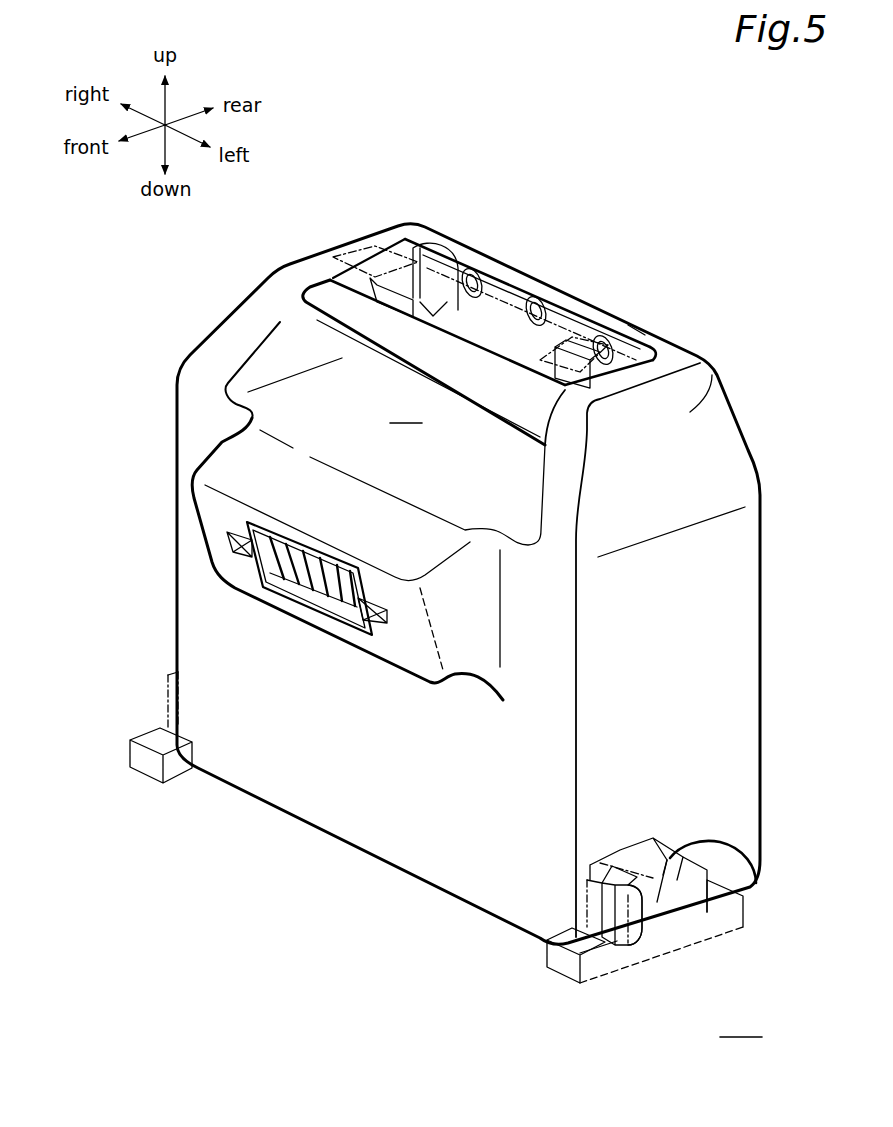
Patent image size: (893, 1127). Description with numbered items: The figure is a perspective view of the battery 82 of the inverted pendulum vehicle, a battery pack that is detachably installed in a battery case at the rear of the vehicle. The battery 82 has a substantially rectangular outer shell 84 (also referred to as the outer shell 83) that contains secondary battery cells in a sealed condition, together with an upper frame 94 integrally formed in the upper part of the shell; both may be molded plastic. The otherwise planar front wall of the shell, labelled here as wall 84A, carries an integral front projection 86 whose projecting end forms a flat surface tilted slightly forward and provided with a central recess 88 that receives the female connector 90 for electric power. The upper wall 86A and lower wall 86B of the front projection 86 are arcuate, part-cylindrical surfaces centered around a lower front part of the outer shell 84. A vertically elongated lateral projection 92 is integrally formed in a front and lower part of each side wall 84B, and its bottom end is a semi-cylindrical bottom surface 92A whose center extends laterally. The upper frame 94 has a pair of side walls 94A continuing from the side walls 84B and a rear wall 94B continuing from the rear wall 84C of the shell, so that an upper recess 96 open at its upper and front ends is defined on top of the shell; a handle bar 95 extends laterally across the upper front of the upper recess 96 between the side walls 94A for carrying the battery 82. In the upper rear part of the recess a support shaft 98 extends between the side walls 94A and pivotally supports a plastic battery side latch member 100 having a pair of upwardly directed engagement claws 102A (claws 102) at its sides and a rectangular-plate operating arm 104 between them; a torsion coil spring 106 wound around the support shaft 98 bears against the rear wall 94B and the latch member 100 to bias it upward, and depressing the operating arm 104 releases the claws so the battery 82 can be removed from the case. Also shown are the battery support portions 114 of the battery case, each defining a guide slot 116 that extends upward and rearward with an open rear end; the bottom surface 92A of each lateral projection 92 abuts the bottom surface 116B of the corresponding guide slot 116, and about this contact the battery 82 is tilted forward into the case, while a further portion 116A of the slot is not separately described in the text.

The battery 82 is at (771, 419).
The outer shell 83 is at (772, 516).
The outer shell 84 is at (740, 745).
The front wall 84A is at (370, 830).
The side wall 84B is at (735, 815).
The rear wall 84C is at (765, 660).
The front projection 86 is at (457, 633).
The upper wall 86A is at (242, 463).
The lower wall 86B is at (440, 684).
The central recess 88 is at (320, 597).
The female connector 90 is at (310, 562).
The lateral projection 92 is at (657, 902).
The semi-cylindrical bottom surface 92A is at (637, 946).
The upper frame 94 is at (700, 481).
The side wall 94A is at (690, 412).
The rear wall 94B is at (625, 328).
The handle bar 95 is at (325, 307).
The upper recess 96 is at (478, 342).
The support shaft 98 is at (512, 290).
The battery side latch member 100 is at (638, 328).
The engagement claws 102 is at (438, 300).
The engagement claws 102A is at (388, 288).
The operating arm 104 is at (557, 345).
The torsion coil spring 106 is at (473, 268).
The battery support portion 114 is at (150, 736).
The guide slot 116 is at (673, 908).
The latch arch 116A is at (733, 844).
The bottom surface 116B is at (648, 930).